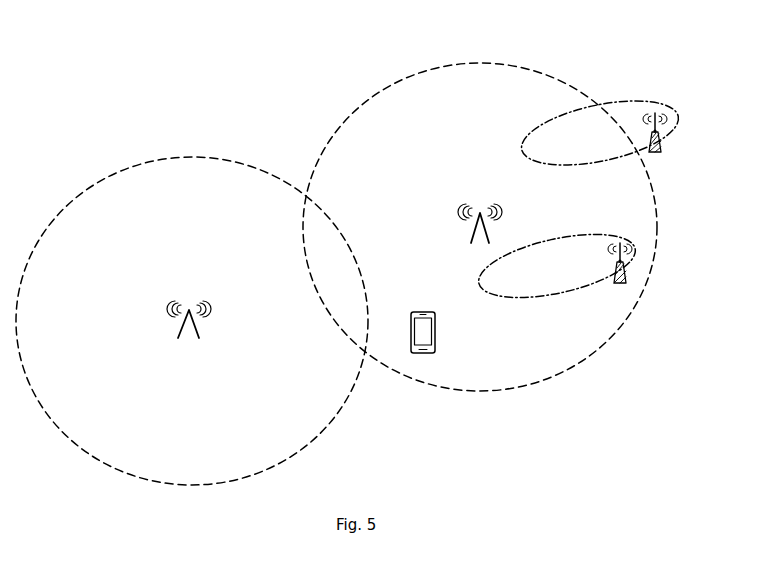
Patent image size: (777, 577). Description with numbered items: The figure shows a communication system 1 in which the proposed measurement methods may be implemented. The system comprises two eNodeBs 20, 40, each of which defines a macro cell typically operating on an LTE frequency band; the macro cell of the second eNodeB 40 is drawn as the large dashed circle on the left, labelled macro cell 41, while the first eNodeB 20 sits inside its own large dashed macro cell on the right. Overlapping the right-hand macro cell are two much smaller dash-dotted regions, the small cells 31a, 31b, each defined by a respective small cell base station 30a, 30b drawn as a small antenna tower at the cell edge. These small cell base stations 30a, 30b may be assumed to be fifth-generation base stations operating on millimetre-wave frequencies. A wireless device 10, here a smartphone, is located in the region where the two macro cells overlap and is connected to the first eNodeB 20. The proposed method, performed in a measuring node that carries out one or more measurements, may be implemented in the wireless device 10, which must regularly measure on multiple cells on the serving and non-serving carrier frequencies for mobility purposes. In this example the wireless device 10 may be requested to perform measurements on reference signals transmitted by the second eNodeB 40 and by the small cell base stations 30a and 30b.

The communication system 1 is at (211, 99).
The wireless device 10 is at (423, 353).
The eNodeB 20 is at (475, 231).
The small cell base station 30a is at (661, 140).
The small cell base station 30b is at (626, 270).
The small cell 31a is at (623, 102).
The small cell 31b is at (563, 292).
The eNodeB 40 is at (183, 324).
The macro cell 41 is at (183, 483).